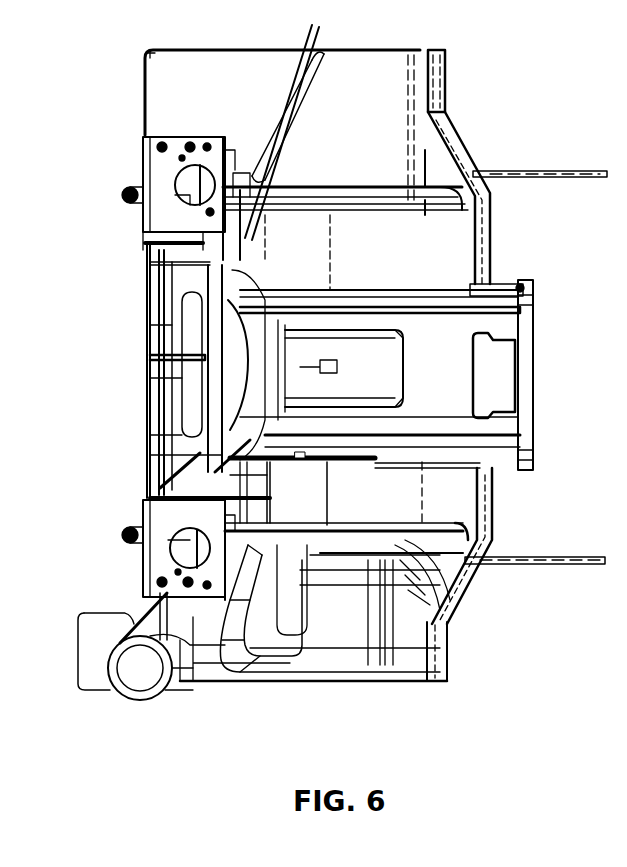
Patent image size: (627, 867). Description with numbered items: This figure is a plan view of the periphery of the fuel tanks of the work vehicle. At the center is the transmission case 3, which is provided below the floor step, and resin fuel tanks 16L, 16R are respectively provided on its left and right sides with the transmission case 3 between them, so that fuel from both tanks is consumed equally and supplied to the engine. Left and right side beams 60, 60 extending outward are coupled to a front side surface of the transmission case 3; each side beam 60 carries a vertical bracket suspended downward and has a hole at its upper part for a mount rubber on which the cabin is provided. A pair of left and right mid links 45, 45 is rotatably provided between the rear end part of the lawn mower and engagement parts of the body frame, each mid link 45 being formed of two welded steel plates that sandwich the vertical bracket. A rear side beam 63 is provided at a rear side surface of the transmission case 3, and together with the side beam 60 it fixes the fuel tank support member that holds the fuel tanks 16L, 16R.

The fuel tank 16R is at (390, 92).
The fuel tank 16L is at (335, 627).
The rear side beam 63 is at (467, 150).
The mid link 45 is at (552, 178).
The transmission case 3 is at (457, 375).
The side beam 60 is at (137, 220).